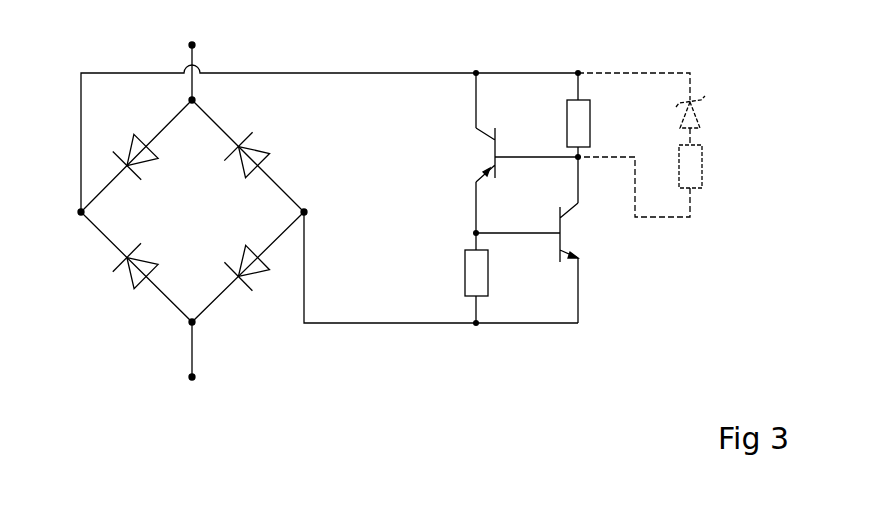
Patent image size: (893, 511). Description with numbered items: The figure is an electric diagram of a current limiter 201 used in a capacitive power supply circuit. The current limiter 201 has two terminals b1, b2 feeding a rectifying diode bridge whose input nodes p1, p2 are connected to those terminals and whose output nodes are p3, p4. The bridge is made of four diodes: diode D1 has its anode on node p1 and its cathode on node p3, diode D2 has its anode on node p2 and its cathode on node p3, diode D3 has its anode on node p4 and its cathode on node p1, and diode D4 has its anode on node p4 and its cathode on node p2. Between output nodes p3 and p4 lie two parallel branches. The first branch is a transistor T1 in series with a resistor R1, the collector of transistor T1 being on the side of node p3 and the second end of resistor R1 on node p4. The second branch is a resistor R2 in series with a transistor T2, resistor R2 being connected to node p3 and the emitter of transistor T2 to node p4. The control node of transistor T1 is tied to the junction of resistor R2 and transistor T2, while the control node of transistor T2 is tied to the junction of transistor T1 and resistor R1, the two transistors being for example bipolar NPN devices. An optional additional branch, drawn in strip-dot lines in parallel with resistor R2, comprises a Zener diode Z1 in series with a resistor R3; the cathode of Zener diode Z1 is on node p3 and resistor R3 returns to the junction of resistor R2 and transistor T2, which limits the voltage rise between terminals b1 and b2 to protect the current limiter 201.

The current limiter 201 is at (592, 25).
The terminal b1 is at (195, 44).
The terminal b2 is at (194, 378).
The input node p1 is at (195, 100).
The input node p2 is at (190, 324).
The output node p3 is at (79, 212).
The output node p4 is at (306, 210).
The diode D1 is at (148, 163).
The diode D2 is at (128, 273).
The diode D3 is at (240, 168).
The diode D4 is at (258, 275).
The transistor T1 is at (496, 133).
The transistor T2 is at (558, 210).
The resistor R1 is at (464, 272).
The resistor R2 is at (592, 130).
The resistor R3 is at (703, 163).
The Zener diode Z1 is at (702, 118).